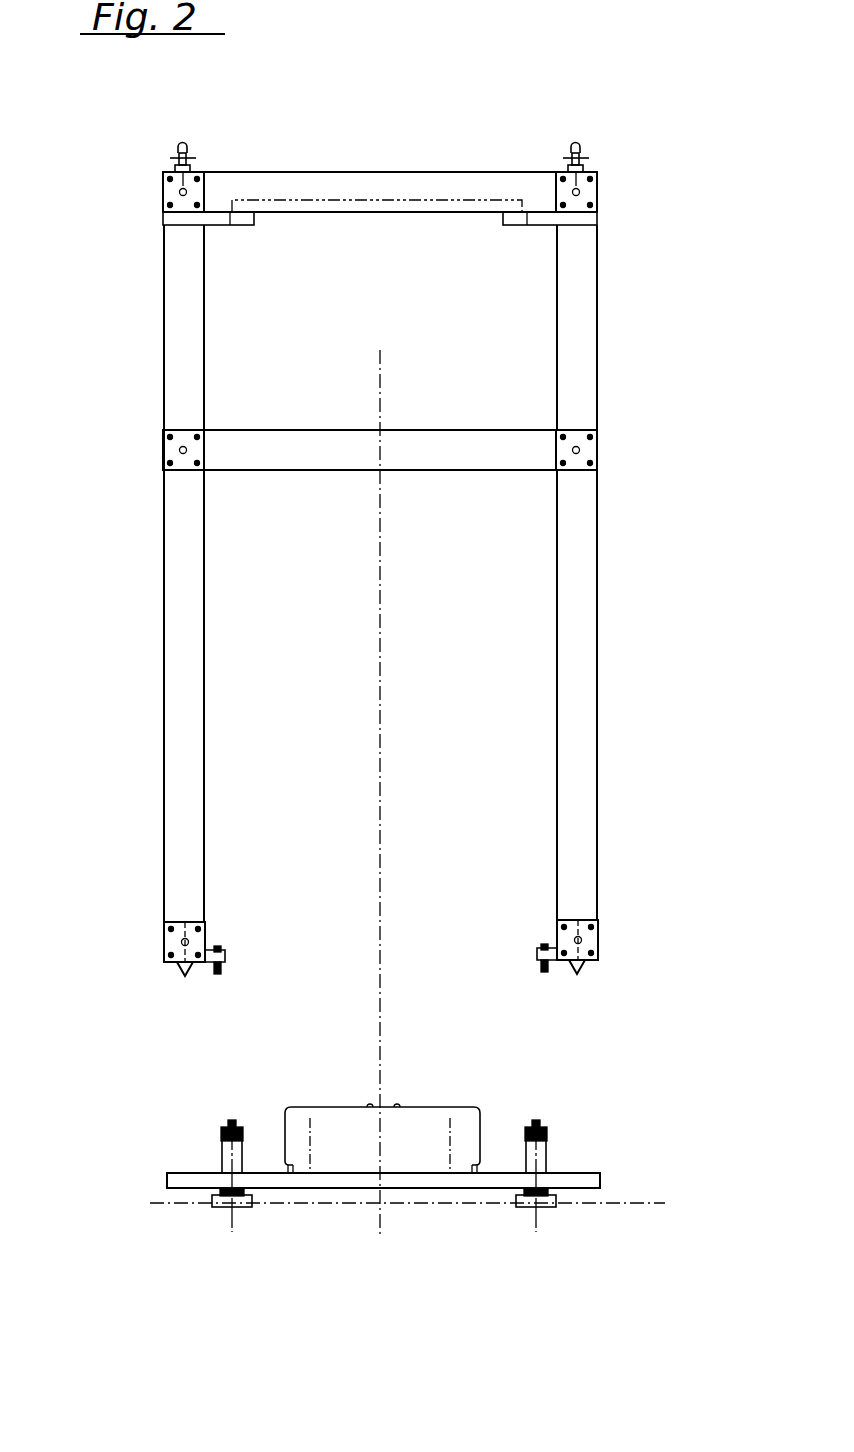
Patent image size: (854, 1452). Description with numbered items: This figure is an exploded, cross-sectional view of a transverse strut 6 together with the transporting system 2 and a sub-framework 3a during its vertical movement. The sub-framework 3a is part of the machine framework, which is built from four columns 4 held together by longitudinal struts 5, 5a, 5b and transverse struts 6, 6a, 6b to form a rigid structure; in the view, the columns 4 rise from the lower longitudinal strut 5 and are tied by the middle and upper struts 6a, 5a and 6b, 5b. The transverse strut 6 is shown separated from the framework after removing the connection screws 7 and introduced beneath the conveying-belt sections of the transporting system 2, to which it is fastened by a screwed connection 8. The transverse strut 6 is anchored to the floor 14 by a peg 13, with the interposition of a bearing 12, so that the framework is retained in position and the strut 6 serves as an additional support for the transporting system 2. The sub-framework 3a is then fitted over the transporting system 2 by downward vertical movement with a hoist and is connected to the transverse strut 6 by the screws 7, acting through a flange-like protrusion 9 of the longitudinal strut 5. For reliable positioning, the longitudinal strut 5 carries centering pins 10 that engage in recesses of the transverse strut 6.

The transporting system 2 is at (410, 1138).
The sub-framework 3a is at (492, 588).
The columns 4 is at (574, 503).
The longitudinal strut 5 is at (175, 935).
The longitudinal strut 5a is at (178, 448).
The longitudinal strut 5b is at (178, 190).
The transverse strut 6 is at (595, 1172).
The transverse strut 6a is at (397, 442).
The transverse strut 6b is at (412, 187).
The connection screws 7 is at (218, 975).
The screwed connection 8 is at (310, 1193).
The flange-like protrusion 9 is at (228, 960).
The centering pins 10 is at (585, 965).
The bearing 12 is at (537, 1187).
The peg 13 is at (548, 1128).
The floor 14 is at (617, 1200).